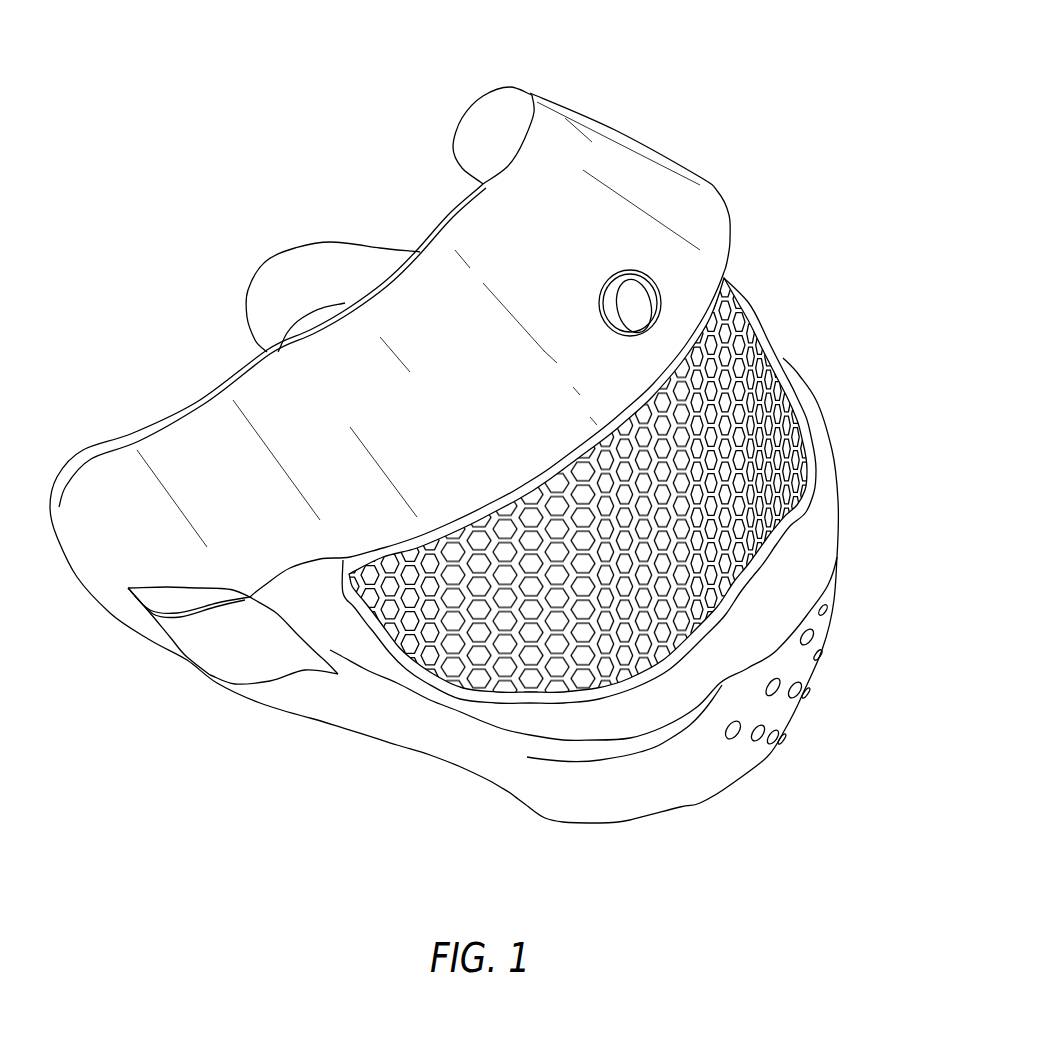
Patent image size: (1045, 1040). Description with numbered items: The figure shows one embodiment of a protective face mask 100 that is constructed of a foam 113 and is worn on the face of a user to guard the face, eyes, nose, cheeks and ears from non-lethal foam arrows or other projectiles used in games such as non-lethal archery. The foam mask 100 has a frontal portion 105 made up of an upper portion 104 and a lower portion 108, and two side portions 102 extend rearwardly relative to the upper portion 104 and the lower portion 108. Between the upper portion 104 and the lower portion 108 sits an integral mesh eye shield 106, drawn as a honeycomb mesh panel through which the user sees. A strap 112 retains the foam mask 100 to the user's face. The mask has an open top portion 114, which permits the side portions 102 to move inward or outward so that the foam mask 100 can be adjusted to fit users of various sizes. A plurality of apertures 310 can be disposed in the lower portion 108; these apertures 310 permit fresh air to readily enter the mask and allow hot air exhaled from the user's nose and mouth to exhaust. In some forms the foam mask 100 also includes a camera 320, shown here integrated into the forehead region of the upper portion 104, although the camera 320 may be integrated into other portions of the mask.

The protective face mask 100 is at (200, 177).
The side portion 102 is at (137, 570).
The upper portion 104 is at (717, 217).
The frontal portion 105 is at (825, 285).
The integral mesh eye shield 106 is at (783, 377).
The lower portion 108 is at (533, 787).
The strap 112 is at (227, 653).
The foam 113 is at (627, 107).
The open top portion 114 is at (390, 200).
The apertures 310 is at (767, 693).
The camera 320 is at (645, 280).